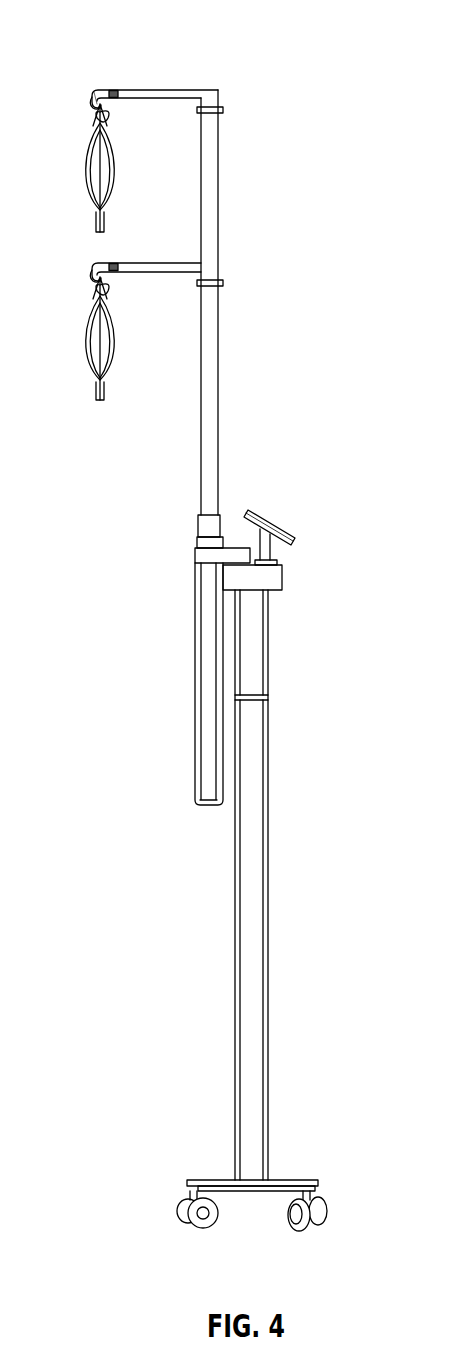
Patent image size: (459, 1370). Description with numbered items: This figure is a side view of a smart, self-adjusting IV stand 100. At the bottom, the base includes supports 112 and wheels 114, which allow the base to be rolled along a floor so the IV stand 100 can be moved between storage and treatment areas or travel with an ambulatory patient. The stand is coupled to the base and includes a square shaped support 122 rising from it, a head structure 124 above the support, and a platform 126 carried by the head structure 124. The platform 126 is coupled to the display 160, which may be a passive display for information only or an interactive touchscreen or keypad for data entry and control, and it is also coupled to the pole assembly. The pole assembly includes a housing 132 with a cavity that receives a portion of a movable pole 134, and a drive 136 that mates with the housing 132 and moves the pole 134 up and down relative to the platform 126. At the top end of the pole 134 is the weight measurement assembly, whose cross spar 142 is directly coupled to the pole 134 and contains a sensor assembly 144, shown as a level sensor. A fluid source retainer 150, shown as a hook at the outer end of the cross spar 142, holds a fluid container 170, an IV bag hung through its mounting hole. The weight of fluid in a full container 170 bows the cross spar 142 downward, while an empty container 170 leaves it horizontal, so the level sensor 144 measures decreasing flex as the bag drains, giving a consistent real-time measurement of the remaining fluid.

The self-adjusting IV stand 100 is at (263, 43).
The supports 112 is at (300, 1178).
The wheels 114 is at (180, 1218).
The support 122 is at (262, 852).
The head structure 124 is at (272, 657).
The platform 126 is at (277, 587).
The housing 132 is at (198, 670).
The movable pole 134 is at (210, 220).
The drive 136 is at (197, 545).
The cross spar 142 is at (162, 90).
The sensor assembly 144 is at (113, 91).
The fluid source retainer 150 is at (90, 105).
The display 160 is at (288, 533).
The fluid container 170 is at (85, 183).